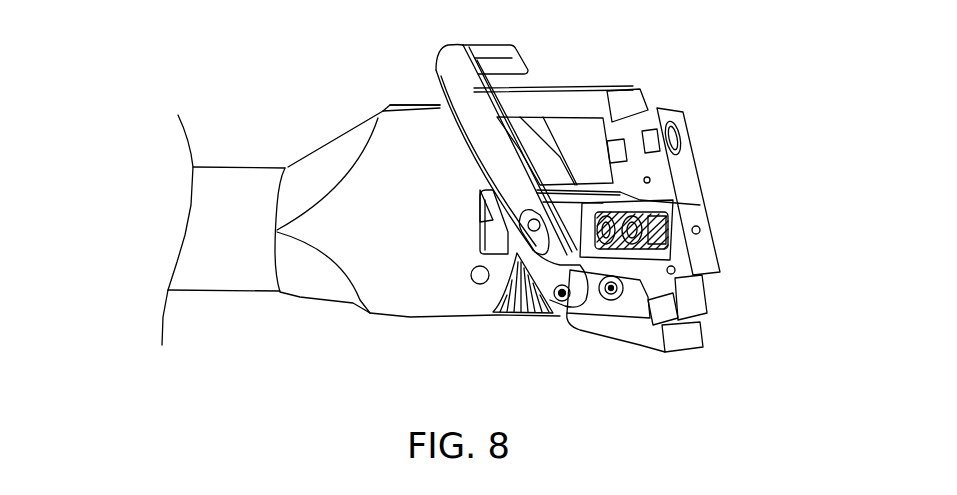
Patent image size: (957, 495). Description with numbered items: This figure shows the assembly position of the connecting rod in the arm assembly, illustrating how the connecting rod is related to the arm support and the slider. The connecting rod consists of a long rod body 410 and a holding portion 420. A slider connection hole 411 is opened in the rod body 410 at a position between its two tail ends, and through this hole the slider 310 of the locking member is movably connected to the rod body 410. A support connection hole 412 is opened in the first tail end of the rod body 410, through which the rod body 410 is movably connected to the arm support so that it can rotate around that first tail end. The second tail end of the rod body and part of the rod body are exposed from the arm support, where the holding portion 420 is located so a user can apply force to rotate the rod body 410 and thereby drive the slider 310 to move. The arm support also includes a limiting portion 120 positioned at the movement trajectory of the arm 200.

The arm 200 is at (398, 148).
The limiting portion 120 is at (447, 110).
The rod body 410 is at (473, 120).
The holding portion 420 is at (483, 62).
The slider 310 is at (570, 243).
The slider connection hole 411 is at (527, 244).
The support connection hole 412 is at (612, 297).